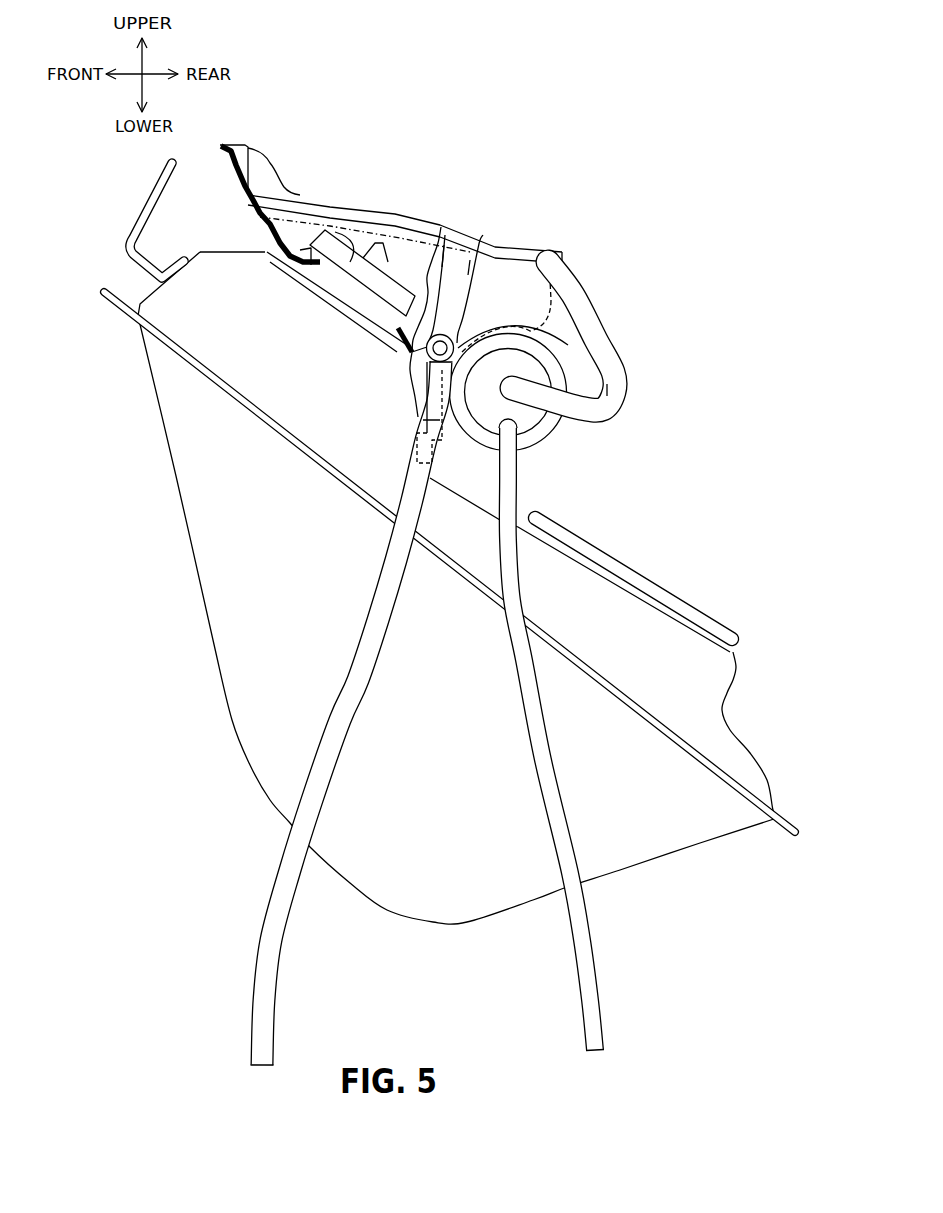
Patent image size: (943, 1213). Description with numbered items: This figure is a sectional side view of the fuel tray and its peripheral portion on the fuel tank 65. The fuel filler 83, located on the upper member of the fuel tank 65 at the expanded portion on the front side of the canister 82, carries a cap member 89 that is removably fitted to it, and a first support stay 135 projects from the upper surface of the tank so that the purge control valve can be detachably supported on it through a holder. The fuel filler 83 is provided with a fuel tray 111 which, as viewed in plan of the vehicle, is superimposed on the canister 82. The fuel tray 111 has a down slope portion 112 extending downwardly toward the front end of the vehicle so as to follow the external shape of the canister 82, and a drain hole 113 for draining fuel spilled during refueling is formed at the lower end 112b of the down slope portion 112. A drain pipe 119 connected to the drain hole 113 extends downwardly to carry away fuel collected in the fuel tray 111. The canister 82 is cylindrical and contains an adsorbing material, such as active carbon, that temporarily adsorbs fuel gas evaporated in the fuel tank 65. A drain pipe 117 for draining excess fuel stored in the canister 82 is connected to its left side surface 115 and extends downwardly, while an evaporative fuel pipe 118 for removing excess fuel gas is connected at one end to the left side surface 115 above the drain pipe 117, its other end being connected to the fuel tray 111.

The first support stay 135 is at (152, 205).
The fuel filler 83 is at (347, 258).
The cap member 89 is at (358, 262).
The lower end 112b is at (445, 235).
The drain hole 113 is at (485, 232).
The fuel tray 111 is at (490, 325).
The down slope portion 112 is at (548, 255).
The canister 82 is at (562, 346).
The left side surface 115 is at (537, 375).
The evaporative fuel pipe 118 is at (607, 390).
The drain pipe 117 is at (507, 483).
The fuel tank 65 is at (678, 590).
The drain pipe 119 is at (353, 682).